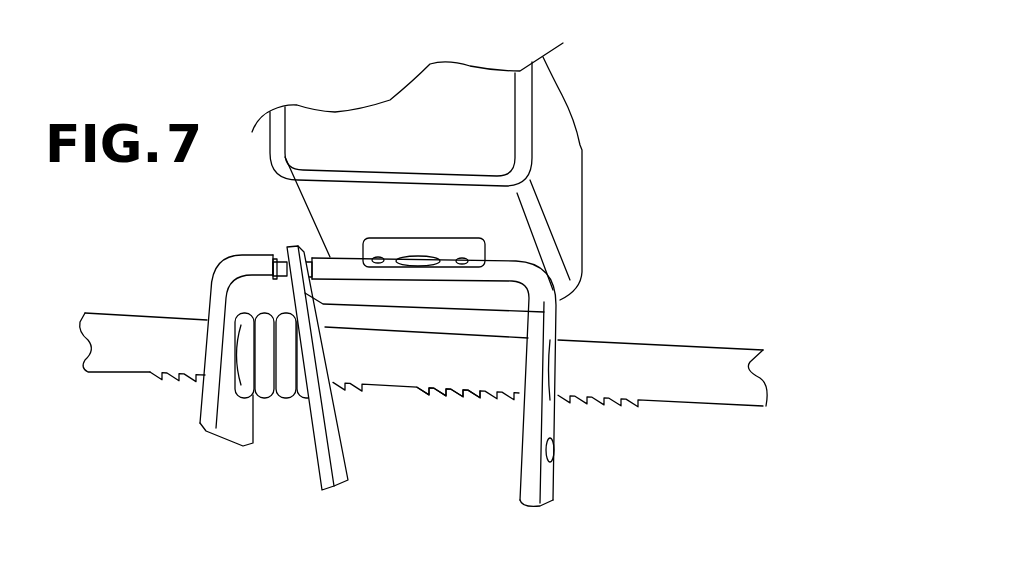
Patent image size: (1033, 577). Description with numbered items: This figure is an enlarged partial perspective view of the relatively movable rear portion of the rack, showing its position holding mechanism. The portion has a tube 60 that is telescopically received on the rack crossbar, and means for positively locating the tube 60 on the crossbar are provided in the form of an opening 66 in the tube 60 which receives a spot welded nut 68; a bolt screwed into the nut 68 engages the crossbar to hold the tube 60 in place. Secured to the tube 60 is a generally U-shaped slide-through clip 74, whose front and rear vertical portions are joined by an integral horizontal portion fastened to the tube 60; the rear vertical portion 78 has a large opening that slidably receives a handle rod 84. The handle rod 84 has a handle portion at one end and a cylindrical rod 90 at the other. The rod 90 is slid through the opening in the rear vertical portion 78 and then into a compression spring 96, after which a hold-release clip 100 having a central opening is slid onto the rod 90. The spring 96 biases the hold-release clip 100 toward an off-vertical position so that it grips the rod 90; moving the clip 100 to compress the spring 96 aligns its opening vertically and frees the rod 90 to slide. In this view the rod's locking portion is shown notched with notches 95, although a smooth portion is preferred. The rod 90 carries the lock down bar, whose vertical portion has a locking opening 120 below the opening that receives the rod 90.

The tube 60 is at (604, 177).
The opening 66 is at (328, 256).
The nut 68 is at (487, 246).
The slide-through clip 74 is at (208, 440).
The rear vertical portion 78 is at (532, 430).
The handle rod 84 is at (92, 381).
The cylindrical rod 90 is at (697, 367).
The notches 95 is at (477, 392).
The compression spring 96 is at (270, 397).
The hold-release clip 100 is at (320, 496).
The locking opening 120 is at (555, 452).